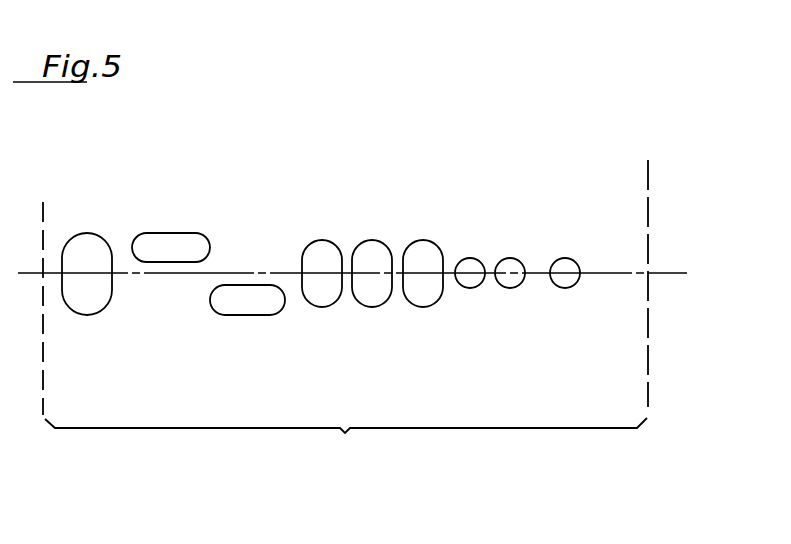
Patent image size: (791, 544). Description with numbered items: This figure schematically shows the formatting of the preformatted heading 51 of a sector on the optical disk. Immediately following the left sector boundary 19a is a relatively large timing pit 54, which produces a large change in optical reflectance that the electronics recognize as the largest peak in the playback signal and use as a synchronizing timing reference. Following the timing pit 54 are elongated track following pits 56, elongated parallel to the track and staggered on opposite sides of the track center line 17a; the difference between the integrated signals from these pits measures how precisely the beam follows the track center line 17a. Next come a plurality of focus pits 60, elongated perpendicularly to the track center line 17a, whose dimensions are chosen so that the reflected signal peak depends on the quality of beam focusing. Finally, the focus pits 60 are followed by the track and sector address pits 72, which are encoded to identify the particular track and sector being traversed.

The track center line 17a is at (633, 273).
The left sector boundary 19a is at (647, 168).
The preformatted heading 51 is at (345, 332).
The timing pit 54 is at (82, 247).
The track following pit 56 is at (163, 240).
The focus pits 60 is at (328, 300).
The track and sector address pits 72 is at (643, 239).